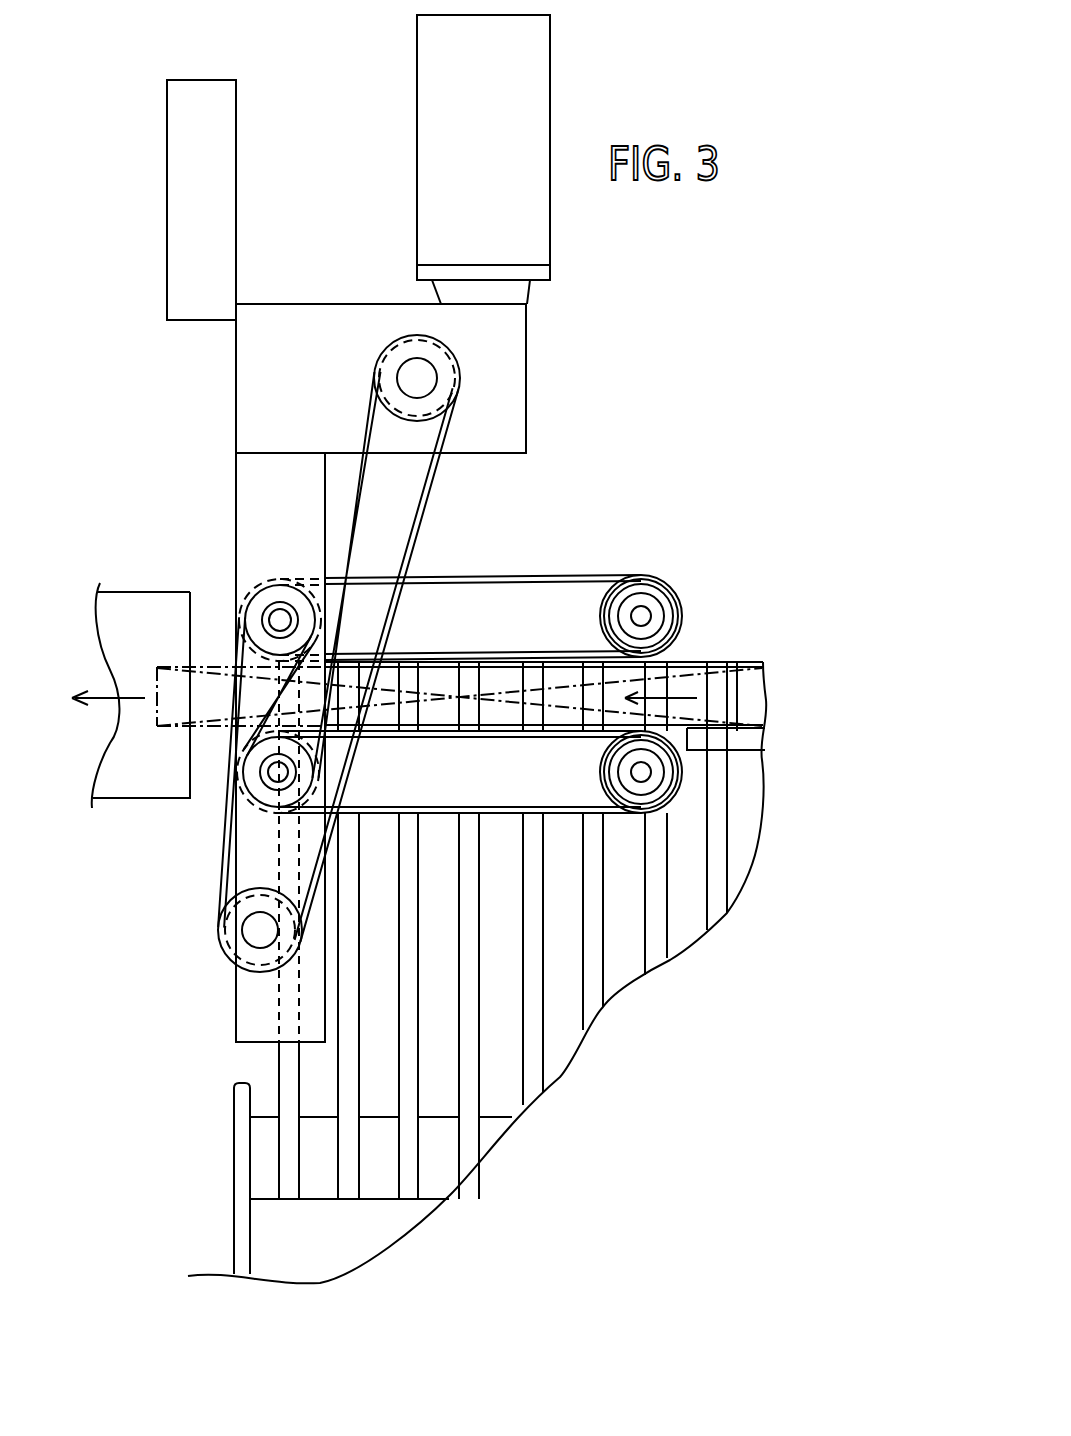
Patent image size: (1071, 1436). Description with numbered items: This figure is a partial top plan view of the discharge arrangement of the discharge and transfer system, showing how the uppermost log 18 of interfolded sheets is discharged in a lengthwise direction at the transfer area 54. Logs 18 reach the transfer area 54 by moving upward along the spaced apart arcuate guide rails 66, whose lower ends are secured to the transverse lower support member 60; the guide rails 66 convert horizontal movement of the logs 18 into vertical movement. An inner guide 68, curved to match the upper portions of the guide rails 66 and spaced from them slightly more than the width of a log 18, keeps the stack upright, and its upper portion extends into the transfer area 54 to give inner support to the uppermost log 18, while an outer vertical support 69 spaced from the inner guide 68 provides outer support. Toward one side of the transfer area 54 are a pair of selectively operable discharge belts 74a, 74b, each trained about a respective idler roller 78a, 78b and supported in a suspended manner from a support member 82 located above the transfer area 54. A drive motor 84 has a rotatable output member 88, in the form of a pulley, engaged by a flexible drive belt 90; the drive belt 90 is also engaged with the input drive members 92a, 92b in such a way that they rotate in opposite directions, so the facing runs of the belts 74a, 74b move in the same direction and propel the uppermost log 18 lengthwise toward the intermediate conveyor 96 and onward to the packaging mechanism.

The log 18 is at (177, 728).
The transfer area 54 is at (445, 660).
The transverse lower support member 60 is at (441, 1176).
The guide rails 66 is at (707, 907).
The inner guide 68 is at (753, 733).
The outer vertical support 69 is at (737, 665).
The discharge belt 74a is at (630, 822).
The discharge belt 74b is at (600, 575).
The idler roller 78a is at (663, 783).
The idler roller 78b is at (650, 600).
The support member 82 is at (236, 490).
The drive motor 84 is at (550, 70).
The rotatable output member 88 is at (443, 366).
The drive belt 90 is at (430, 494).
The input drive member 92a is at (240, 765).
The input drive member 92b is at (263, 578).
The intermediate conveyor 96 is at (88, 770).